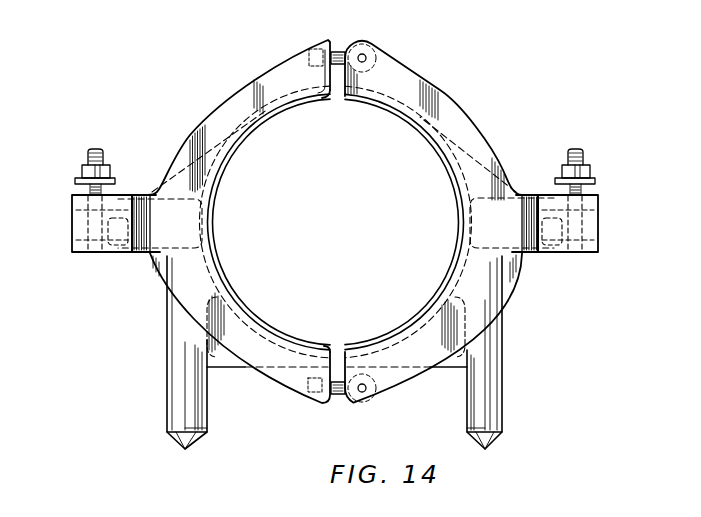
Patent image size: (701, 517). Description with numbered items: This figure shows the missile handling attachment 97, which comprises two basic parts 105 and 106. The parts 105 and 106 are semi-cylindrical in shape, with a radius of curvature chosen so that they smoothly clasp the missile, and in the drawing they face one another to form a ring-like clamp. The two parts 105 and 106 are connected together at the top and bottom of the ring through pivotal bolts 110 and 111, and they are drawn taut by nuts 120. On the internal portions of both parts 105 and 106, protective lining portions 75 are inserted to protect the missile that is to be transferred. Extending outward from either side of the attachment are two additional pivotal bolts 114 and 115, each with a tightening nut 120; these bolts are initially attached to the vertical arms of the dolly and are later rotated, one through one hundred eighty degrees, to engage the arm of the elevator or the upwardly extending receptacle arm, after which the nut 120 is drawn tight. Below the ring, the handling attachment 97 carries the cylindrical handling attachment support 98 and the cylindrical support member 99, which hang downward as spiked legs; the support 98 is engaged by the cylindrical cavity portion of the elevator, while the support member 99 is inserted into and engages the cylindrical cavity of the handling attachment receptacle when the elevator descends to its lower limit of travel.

The protective lining portions 75 is at (252, 320).
The missile handling attachment 97 is at (188, 109).
The cylindrical handling attachment support 98 is at (178, 417).
The cylindrical support member 99 is at (491, 412).
The basic part 105 is at (236, 103).
The basic part 106 is at (453, 113).
The pivotal bolt 110 is at (340, 51).
The pivotal bolt 111 is at (338, 398).
The pivotal bolt 114 is at (87, 153).
The pivotal bolt 115 is at (584, 157).
The nut 120 is at (83, 172).